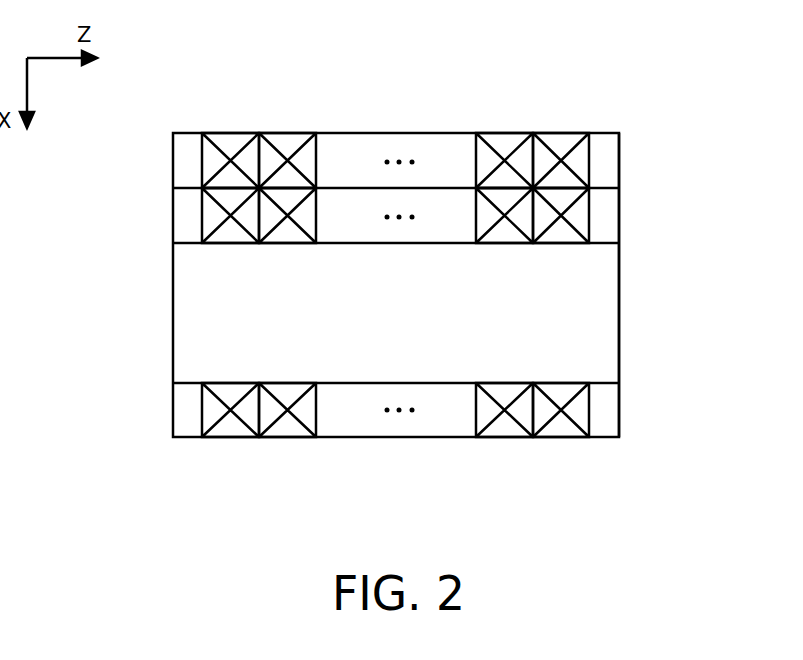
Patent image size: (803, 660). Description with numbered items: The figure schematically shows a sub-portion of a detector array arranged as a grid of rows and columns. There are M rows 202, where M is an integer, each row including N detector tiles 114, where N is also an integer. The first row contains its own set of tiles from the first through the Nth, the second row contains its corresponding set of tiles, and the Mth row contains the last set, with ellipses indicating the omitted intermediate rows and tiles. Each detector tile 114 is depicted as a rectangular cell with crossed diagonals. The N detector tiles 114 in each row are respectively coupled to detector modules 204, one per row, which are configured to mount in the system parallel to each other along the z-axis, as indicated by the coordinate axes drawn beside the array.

The detector tiles 114 is at (580, 455).
The rows 202 is at (164, 415).
The detector modules 204 is at (619, 162).